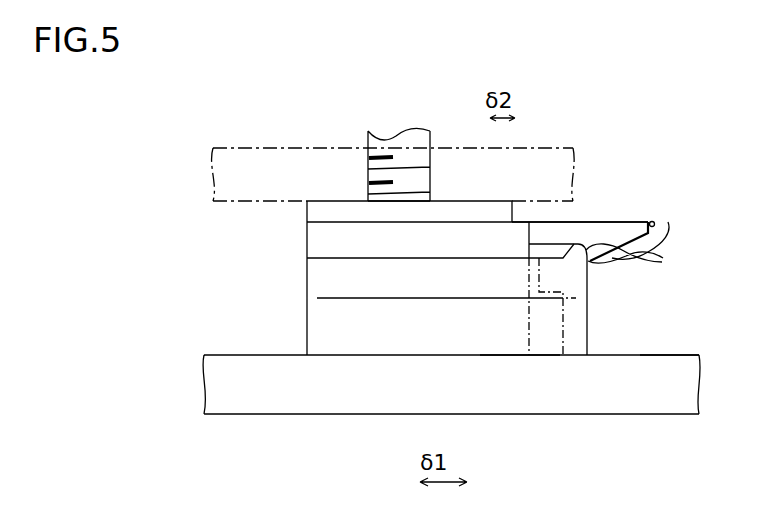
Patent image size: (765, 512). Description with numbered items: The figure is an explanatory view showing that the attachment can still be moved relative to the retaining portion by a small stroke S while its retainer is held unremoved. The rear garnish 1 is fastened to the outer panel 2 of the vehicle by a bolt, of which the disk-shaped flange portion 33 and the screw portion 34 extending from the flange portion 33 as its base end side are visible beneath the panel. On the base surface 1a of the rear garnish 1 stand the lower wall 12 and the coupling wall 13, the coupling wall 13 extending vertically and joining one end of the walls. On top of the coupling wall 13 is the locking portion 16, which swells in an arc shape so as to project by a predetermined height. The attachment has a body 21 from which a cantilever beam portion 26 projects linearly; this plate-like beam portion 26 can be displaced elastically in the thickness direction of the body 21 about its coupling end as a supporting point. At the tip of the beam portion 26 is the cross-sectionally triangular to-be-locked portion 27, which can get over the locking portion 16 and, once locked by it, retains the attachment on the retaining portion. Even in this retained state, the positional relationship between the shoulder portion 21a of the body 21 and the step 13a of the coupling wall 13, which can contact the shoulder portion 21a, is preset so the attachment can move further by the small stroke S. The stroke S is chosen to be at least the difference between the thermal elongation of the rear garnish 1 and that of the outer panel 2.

The rear garnish 1 is at (623, 414).
The base surface 1a is at (688, 355).
The outer panel 2 is at (280, 148).
The lower wall 12 is at (512, 342).
The coupling wall 13 is at (587, 328).
The step 13a is at (563, 306).
The locking portion 16 is at (645, 263).
The body 21 is at (307, 244).
The shoulder portion 21a is at (528, 275).
The beam portion 26 is at (543, 230).
The to-be-locked portion 27 is at (627, 223).
The flange portion 33 is at (307, 217).
The screw portion 34 is at (385, 137).
The small stroke S is at (668, 222).